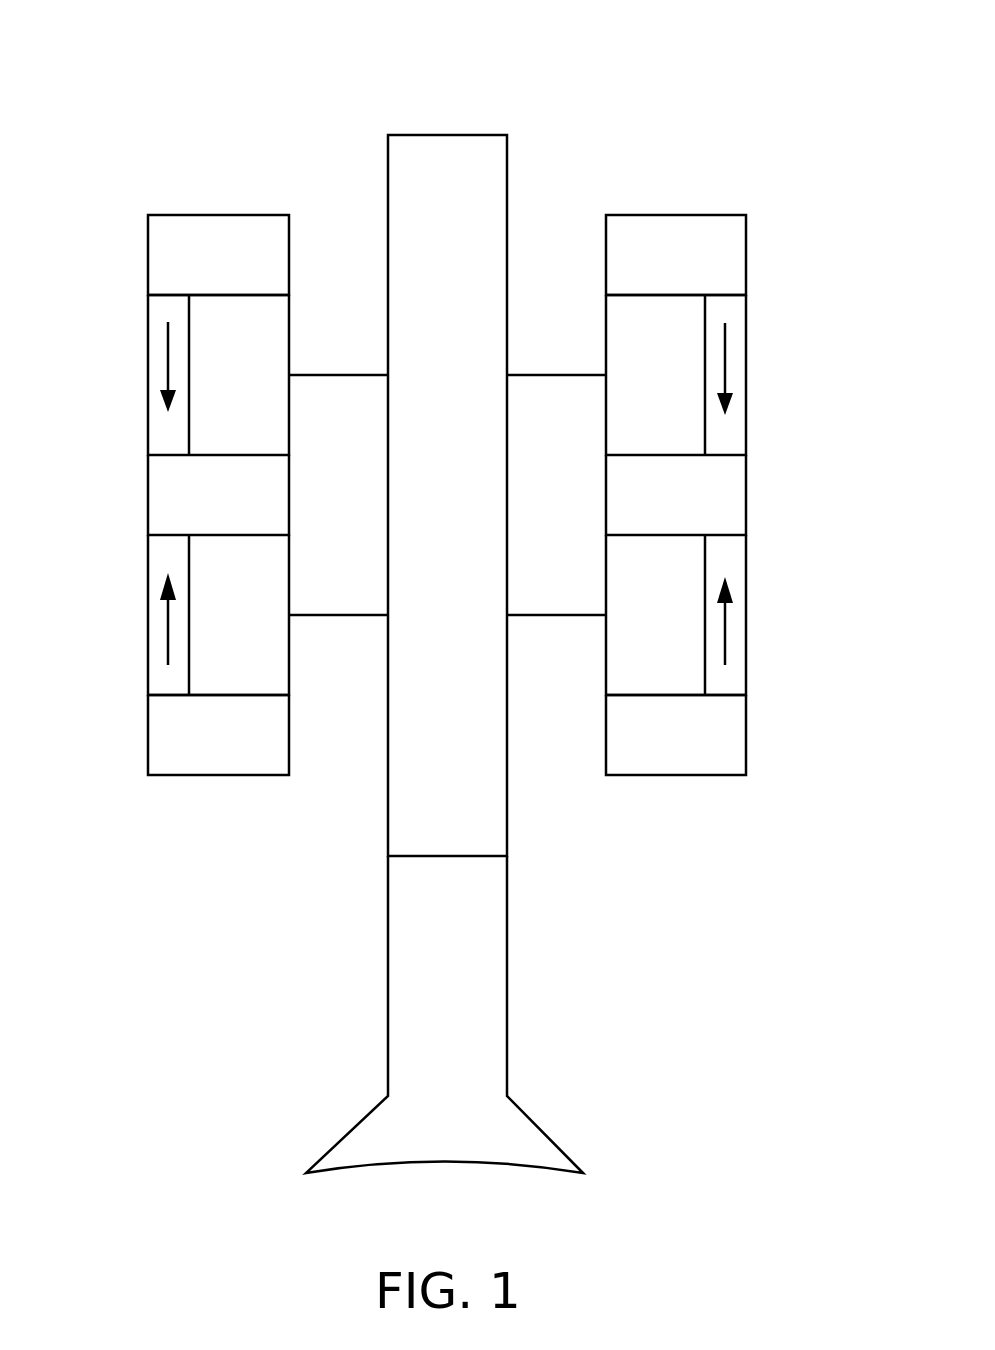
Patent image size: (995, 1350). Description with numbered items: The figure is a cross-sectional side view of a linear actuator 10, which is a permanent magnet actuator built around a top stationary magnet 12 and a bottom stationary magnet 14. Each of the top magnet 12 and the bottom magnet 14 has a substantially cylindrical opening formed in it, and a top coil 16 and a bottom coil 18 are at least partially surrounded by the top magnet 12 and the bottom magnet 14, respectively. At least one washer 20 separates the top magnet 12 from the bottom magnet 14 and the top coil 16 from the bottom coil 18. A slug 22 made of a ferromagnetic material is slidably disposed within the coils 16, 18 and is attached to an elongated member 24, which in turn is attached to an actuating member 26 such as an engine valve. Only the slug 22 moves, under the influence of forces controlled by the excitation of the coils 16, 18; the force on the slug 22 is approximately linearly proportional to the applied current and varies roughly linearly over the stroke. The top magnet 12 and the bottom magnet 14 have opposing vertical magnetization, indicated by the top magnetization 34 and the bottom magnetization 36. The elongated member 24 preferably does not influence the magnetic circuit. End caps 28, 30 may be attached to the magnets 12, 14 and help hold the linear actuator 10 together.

The linear actuator 10 is at (725, 43).
The top stationary magnet 12 is at (146, 437).
The bottom stationary magnet 14 is at (146, 555).
The top coil 16 is at (248, 295).
The bottom coil 18 is at (227, 695).
The washer 20 is at (146, 497).
The slug 22 is at (348, 375).
The elongated member 24 is at (468, 135).
The actuating member 26 is at (505, 1015).
The end cap 28 is at (188, 214).
The end cap 30 is at (227, 777).
The top magnetization 34 is at (165, 358).
The bottom magnetization 36 is at (165, 633).